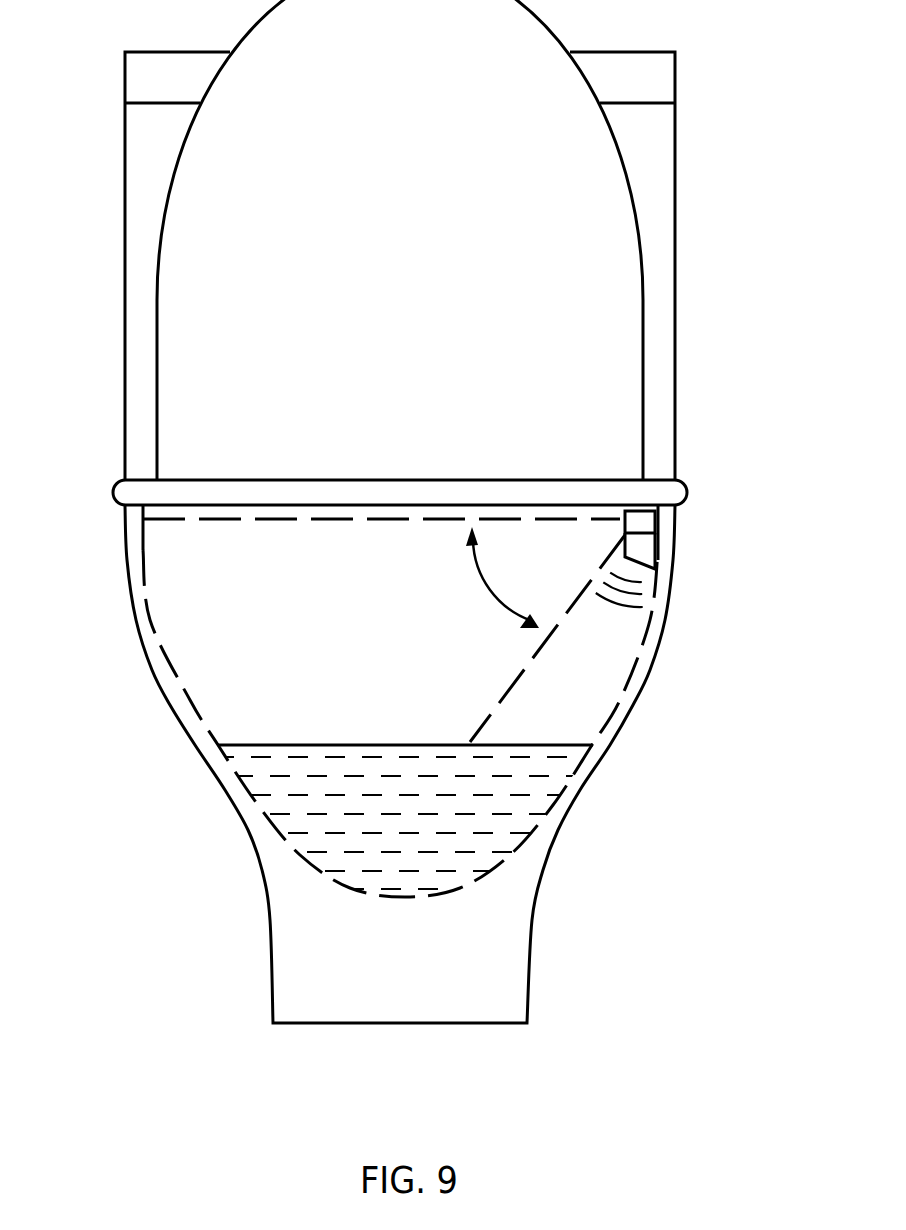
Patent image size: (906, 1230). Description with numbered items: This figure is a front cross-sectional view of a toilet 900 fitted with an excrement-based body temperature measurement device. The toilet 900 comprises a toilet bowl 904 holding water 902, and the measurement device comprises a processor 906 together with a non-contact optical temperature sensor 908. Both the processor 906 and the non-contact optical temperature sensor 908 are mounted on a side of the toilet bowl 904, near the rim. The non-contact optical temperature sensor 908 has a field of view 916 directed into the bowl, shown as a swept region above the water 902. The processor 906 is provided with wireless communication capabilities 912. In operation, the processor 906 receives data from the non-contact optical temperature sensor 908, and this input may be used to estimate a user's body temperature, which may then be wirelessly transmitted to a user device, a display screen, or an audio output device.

The toilet 900 is at (400, 511).
The water 902 is at (400, 817).
The toilet bowl 904 is at (145, 590).
The processor 906 is at (656, 560).
The non-contact optical temperature sensor 908 is at (656, 527).
The wireless communication capabilities 912 is at (622, 608).
The field of view 916 is at (483, 582).